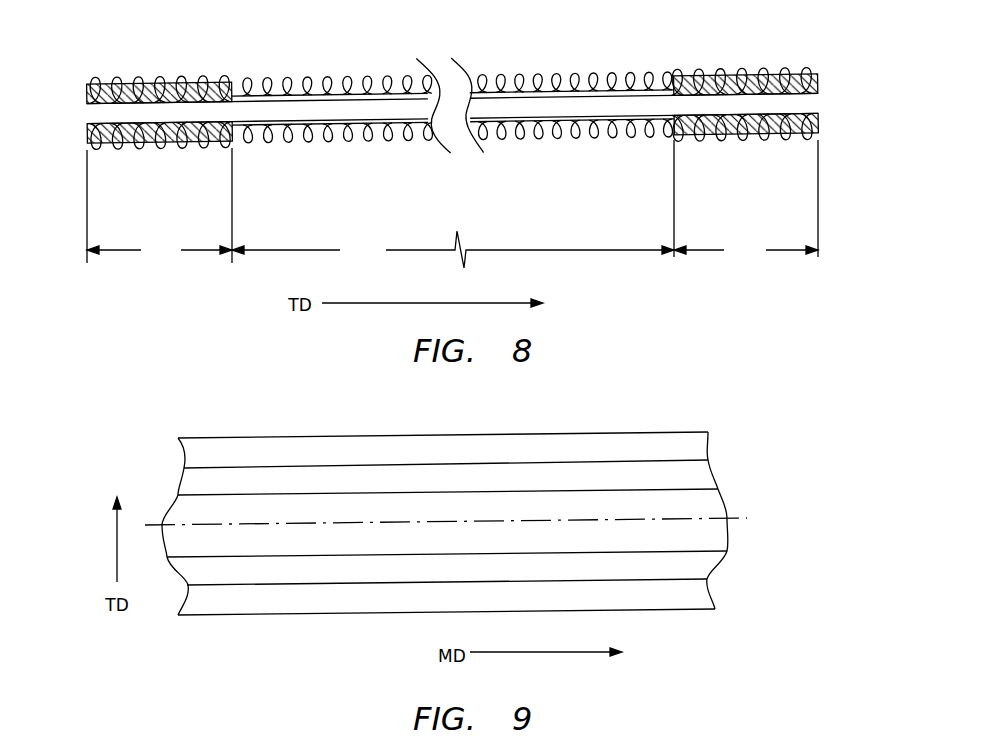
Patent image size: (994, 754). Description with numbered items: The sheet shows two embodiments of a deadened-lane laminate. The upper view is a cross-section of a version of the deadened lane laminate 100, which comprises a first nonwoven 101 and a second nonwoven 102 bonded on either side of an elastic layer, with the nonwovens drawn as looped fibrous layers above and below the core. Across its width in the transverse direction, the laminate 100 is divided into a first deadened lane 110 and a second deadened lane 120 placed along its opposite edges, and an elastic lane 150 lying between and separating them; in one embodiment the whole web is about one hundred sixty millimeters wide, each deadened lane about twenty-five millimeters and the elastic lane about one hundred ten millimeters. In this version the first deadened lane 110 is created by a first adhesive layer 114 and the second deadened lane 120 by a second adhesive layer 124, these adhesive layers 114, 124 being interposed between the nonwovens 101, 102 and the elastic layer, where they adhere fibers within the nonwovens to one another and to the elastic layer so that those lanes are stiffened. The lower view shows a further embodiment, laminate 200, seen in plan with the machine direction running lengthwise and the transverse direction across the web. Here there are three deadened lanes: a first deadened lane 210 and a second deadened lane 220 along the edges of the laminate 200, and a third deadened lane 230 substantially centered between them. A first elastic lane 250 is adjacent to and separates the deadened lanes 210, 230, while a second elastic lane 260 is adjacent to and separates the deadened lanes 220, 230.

In FIG. 8, the deadened lane laminate 100 is at (487, 92).
In FIG. 8, the first nonwoven 101 is at (322, 83).
In FIG. 8, the second nonwoven 102 is at (573, 133).
In FIG. 8, the first deadened lane 110 is at (159, 250).
In FIG. 8, the first adhesive layer 114 is at (152, 80).
In FIG. 8, the second deadened lane 120 is at (746, 250).
In FIG. 8, the second adhesive layer 124 is at (727, 78).
In FIG. 8, the elastic lane 150 is at (453, 249).
In FIG. 9, the laminate 200 is at (477, 541).
In FIG. 9, the first deadened lane 210 is at (700, 603).
In FIG. 9, the second deadened lane 220 is at (698, 446).
In FIG. 9, the third deadened lane 230 is at (700, 503).
In FIG. 9, the first elastic lane 250 is at (704, 560).
In FIG. 9, the second elastic lane 260 is at (703, 471).